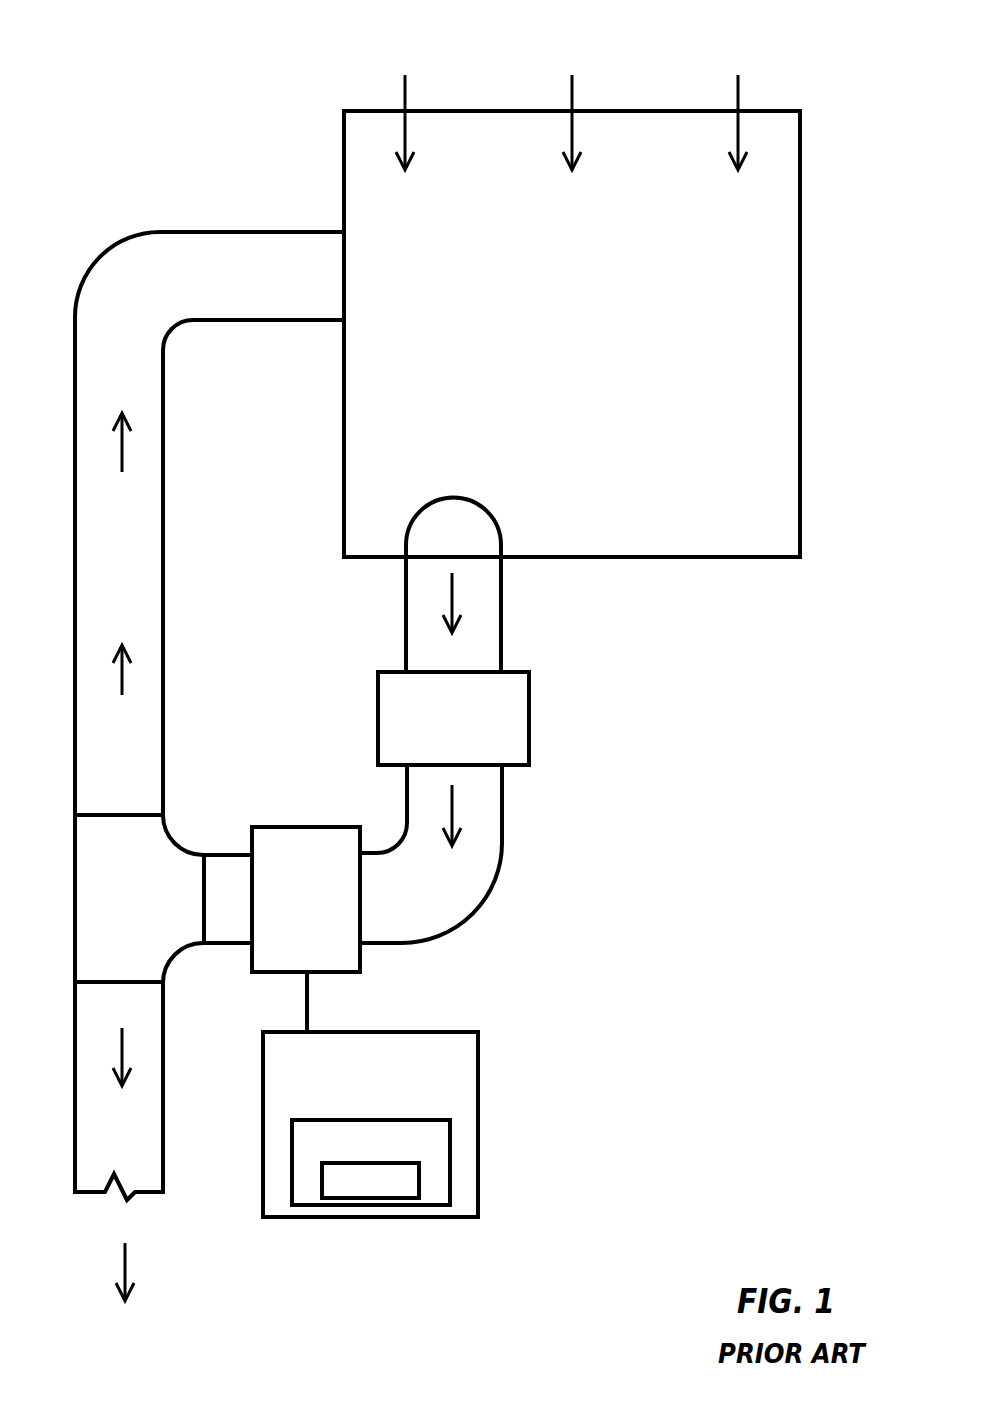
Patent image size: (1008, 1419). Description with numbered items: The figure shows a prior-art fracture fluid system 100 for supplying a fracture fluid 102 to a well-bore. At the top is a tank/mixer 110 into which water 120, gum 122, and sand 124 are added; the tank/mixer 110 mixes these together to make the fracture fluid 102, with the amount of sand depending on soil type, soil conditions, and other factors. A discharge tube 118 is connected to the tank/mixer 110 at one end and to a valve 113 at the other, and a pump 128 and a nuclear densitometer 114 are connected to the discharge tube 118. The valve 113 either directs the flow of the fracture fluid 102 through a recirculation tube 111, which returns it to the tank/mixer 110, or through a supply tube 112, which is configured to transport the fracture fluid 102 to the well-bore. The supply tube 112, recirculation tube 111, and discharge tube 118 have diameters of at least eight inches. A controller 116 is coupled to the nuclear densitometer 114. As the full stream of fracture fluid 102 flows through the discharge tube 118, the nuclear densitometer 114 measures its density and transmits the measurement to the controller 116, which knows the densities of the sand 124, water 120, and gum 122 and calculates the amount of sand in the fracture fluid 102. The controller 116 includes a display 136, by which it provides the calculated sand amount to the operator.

The fracture fluid system 100 is at (738, 783).
The fracture fluid 102 is at (130, 1277).
The tank/mixer 110 is at (552, 336).
The recirculation tube 111 is at (163, 643).
The supply tube 112 is at (163, 1035).
The valve 113 is at (113, 930).
The nuclear densitometer 114 is at (286, 942).
The controller 116 is at (352, 1104).
The discharge tube 118 is at (536, 640).
The water 120 is at (385, 58).
The gum 122 is at (552, 58).
The sand 124 is at (718, 58).
The pump 128 is at (433, 749).
The display 136 is at (450, 1155).